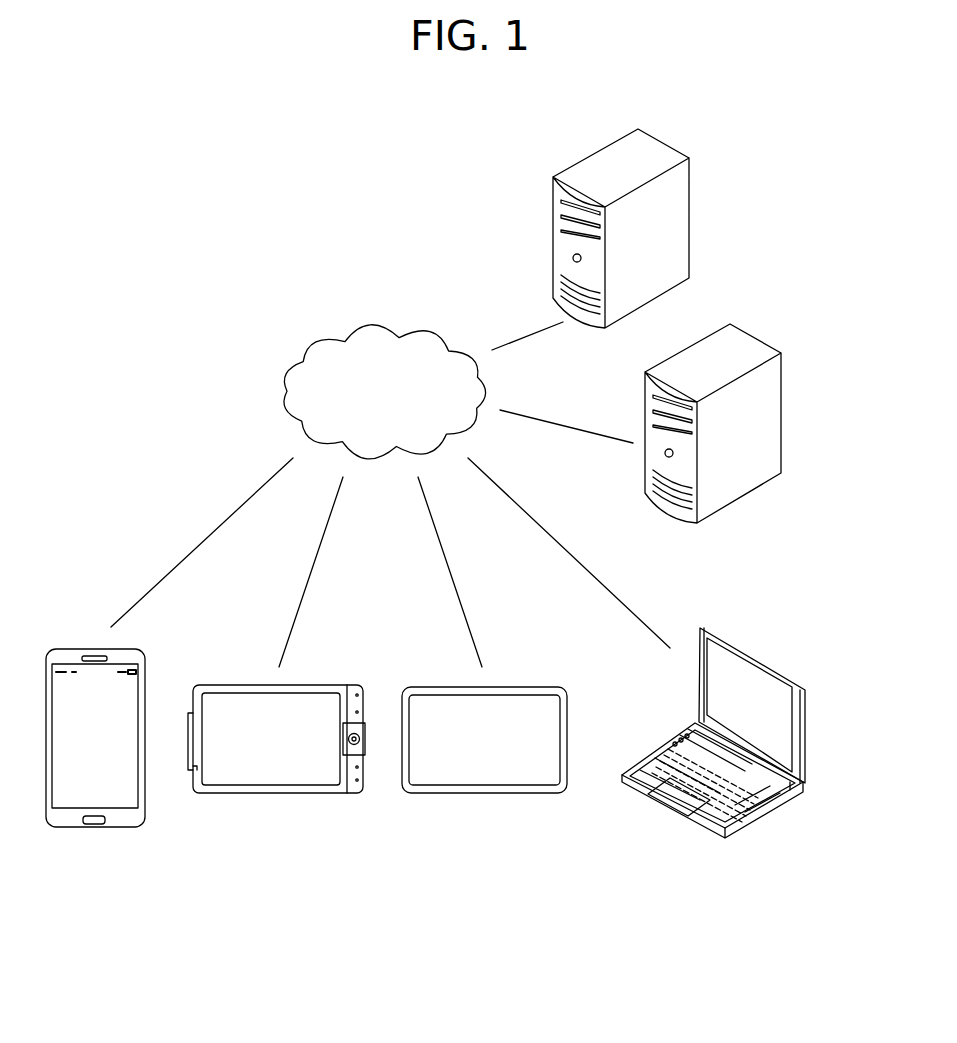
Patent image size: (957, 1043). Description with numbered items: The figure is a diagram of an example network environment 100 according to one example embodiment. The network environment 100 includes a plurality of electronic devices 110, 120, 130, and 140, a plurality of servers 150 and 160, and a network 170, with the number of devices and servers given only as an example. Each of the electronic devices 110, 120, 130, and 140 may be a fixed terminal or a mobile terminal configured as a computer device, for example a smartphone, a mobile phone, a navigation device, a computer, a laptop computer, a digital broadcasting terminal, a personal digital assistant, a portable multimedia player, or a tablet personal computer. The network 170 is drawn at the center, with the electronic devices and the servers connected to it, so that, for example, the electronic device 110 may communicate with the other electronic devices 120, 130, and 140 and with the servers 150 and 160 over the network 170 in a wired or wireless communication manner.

The network environment 100 is at (362, 168).
The electronic device 110 is at (95, 828).
The electronic device 120 is at (277, 795).
The electronic device 130 is at (485, 793).
The electronic device 140 is at (805, 733).
The server 150 is at (782, 412).
The server 160 is at (690, 218).
The network 170 is at (384, 326).